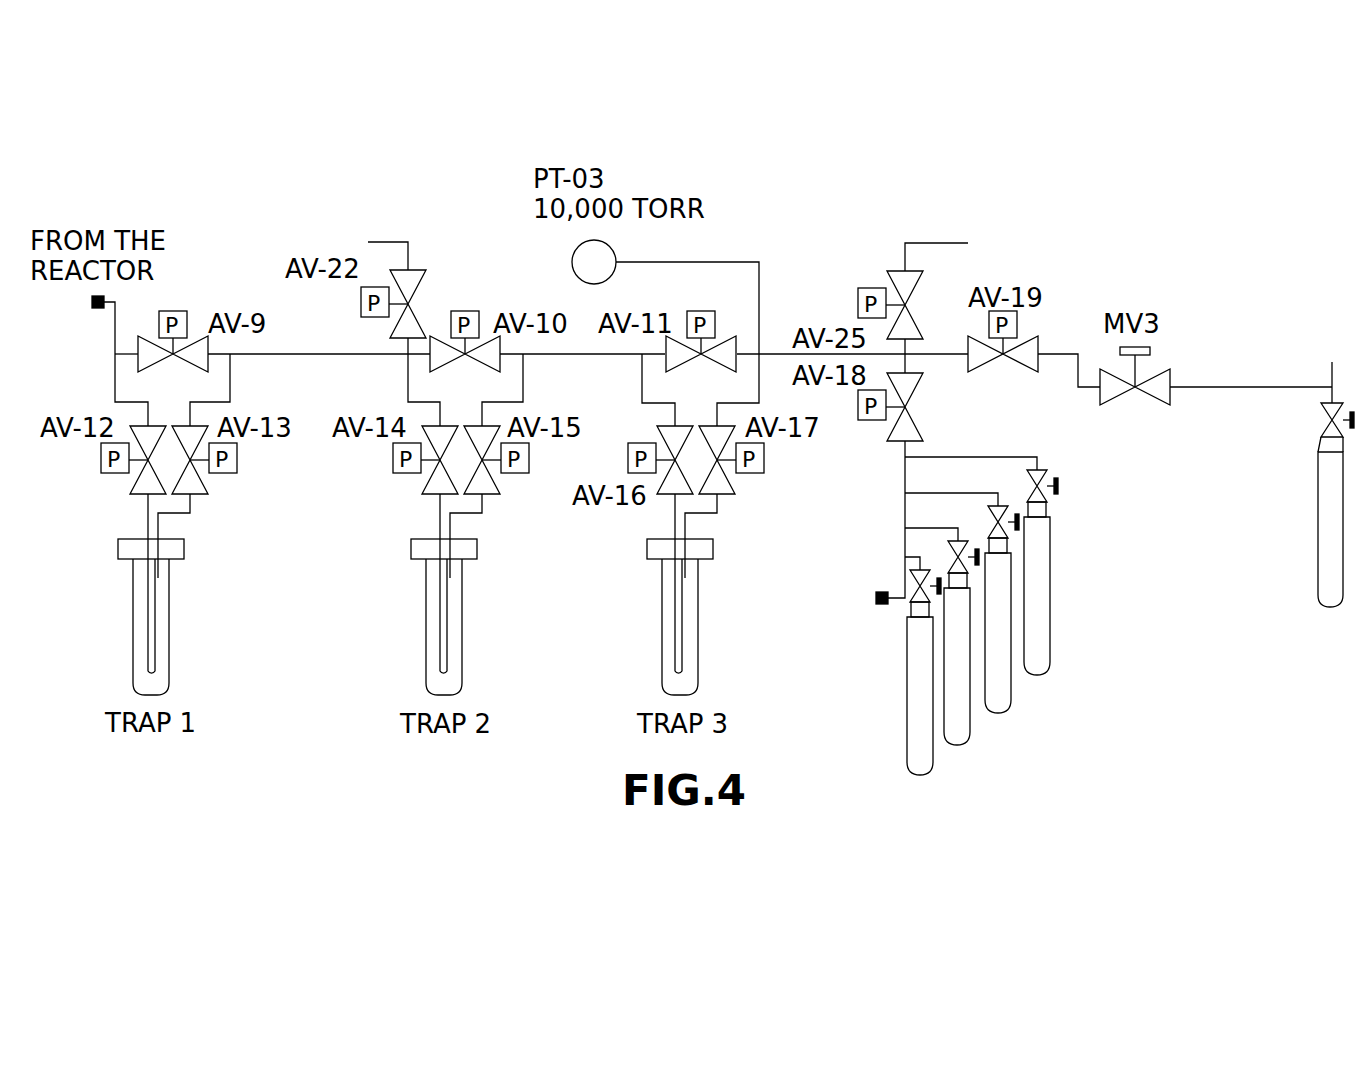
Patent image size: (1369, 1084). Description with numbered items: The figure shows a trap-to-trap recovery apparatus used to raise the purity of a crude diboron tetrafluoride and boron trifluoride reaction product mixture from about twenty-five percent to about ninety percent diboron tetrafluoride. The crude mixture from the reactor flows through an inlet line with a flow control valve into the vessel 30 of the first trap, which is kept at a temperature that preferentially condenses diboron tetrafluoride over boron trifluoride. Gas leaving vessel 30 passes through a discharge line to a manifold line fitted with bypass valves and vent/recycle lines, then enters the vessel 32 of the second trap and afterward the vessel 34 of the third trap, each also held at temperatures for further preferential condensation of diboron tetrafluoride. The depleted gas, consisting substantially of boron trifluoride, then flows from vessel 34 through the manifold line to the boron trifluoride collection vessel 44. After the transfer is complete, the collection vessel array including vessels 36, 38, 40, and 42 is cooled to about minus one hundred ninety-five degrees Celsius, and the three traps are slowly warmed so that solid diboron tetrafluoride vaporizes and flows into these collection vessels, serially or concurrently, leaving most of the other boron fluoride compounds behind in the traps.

The vessel of Trap 1 30 is at (170, 627).
The vessel of Trap 2 32 is at (462, 630).
The vessel of Trap 3 34 is at (697, 630).
The B2F4 collection vessel 36 is at (933, 765).
The B2F4 collection vessel 38 is at (970, 740).
The B2F4 collection vessel 40 is at (1011, 703).
The B2F4 collection vessel 42 is at (1050, 655).
The BF3 collection vessel 44 is at (1318, 486).